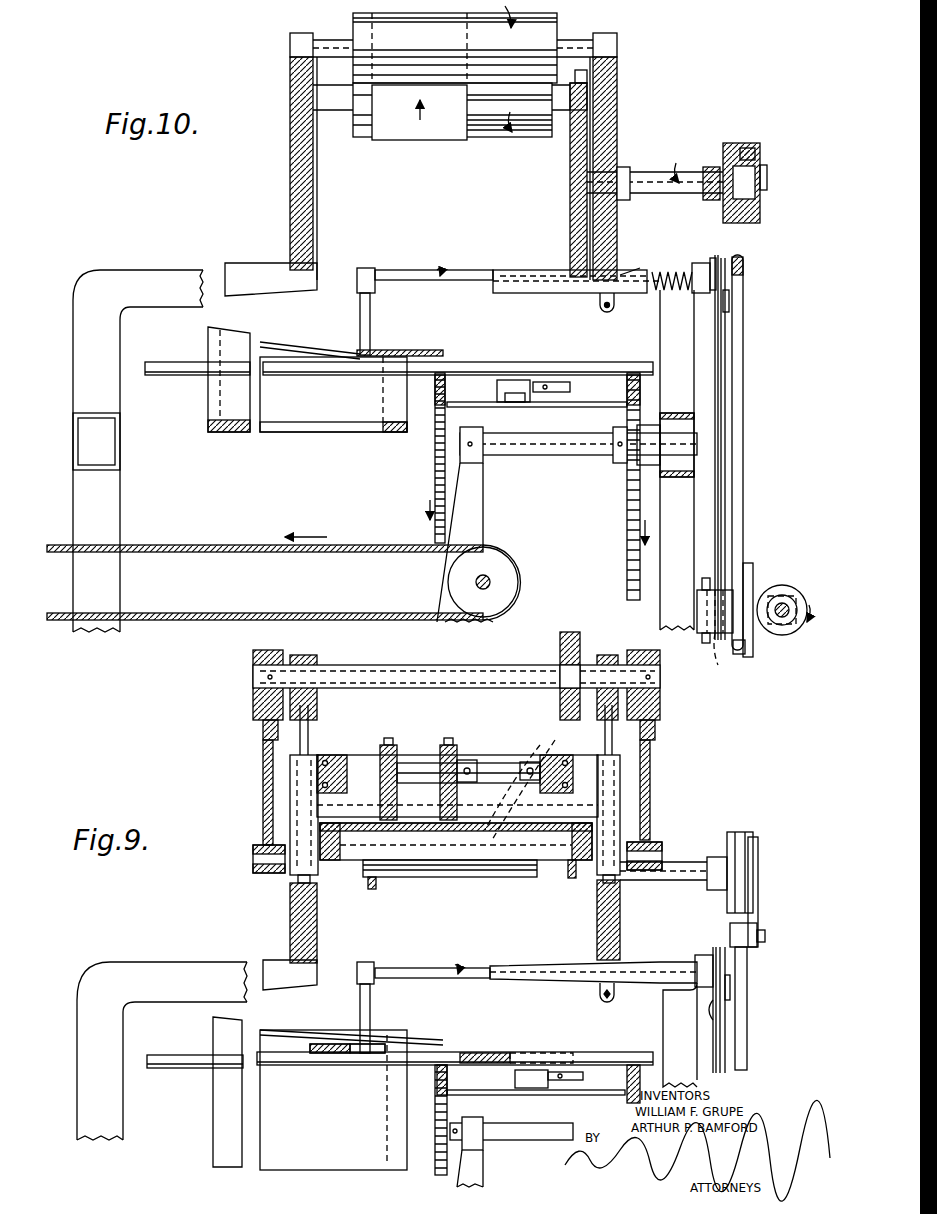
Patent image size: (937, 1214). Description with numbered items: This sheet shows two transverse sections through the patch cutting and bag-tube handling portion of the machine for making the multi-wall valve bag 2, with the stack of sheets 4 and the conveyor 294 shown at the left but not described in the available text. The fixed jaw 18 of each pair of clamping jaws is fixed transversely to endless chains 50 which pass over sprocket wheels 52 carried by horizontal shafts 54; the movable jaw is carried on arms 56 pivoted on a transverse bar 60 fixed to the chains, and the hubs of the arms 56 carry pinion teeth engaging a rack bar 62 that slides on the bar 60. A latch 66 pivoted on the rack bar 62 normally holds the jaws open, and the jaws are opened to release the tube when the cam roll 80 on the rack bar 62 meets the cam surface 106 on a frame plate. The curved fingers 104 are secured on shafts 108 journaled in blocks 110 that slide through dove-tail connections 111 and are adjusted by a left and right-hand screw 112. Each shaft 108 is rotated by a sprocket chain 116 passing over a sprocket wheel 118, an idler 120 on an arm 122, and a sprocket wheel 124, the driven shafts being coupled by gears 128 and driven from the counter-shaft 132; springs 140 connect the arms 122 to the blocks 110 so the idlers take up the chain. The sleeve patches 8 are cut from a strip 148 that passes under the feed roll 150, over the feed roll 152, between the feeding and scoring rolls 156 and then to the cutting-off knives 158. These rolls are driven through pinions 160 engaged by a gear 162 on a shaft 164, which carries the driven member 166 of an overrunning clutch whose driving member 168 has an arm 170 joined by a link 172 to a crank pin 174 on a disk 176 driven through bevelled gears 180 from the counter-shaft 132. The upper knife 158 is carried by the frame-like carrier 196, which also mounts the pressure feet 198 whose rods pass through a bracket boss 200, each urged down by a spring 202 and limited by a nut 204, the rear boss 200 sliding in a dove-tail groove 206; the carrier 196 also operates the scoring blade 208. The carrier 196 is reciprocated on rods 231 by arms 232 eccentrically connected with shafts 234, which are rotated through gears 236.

In FIG. 9, the bag 2 is at (262, 1170).
In FIG. 10, the bag 2 is at (232, 437).
In FIG. 10, the stack of sheets 4 is at (208, 418).
In FIG. 9, the sleeve sheets or patches 8 is at (440, 1035).
In FIG. 10, the sleeve sheets or patches 8 is at (432, 348).
In FIG. 9, the jaw 18 is at (158, 1070).
In FIG. 10, the jaw 18 is at (150, 377).
In FIG. 9, the endless chains 50 is at (435, 1160).
In FIG. 10, the endless chains 50 is at (430, 535).
In FIG. 10, the sprocket wheels 52 is at (435, 470).
In FIG. 9, the horizontal shafts 54 is at (520, 1120).
In FIG. 10, the horizontal shafts 54 is at (545, 455).
In FIG. 9, the arms 56 is at (355, 1053).
In FIG. 9, the transverse bar 60 is at (345, 1055).
In FIG. 9, the rack bar 62 is at (318, 1052).
In FIG. 9, the latch 66 is at (578, 1072).
In FIG. 10, the latch 66 is at (555, 392).
In FIG. 9, the cam roll 80 is at (515, 1080).
In FIG. 10, the cam roll 80 is at (518, 402).
In FIG. 9, the curved fingers 104 is at (358, 1012).
In FIG. 10, the curved fingers 104 is at (358, 325).
In FIG. 10, the cam surface 106 is at (510, 380).
In FIG. 9, the shafts 108 is at (430, 968).
In FIG. 10, the shafts 108 is at (437, 274).
In FIG. 9, the blocks 110 is at (518, 966).
In FIG. 10, the blocks 110 is at (560, 293).
In FIG. 10, the dove-tail connections 111 is at (620, 275).
In FIG. 9, the left and right-hand screw 112 is at (600, 994).
In FIG. 10, the left and right-hand screw 112 is at (607, 313).
In FIG. 9, the sprocket chains 116 is at (718, 1050).
In FIG. 10, the sprocket chains 116 is at (720, 352).
In FIG. 9, the sprocket wheel 118 is at (713, 952).
In FIG. 10, the sprocket wheel 118 is at (737, 255).
In FIG. 9, the idler 120 is at (730, 990).
In FIG. 10, the idler 120 is at (728, 301).
In FIG. 9, the arm 122 is at (718, 1022).
In FIG. 10, the sprocket wheel 124 is at (718, 650).
In FIG. 10, the gears 128 is at (703, 645).
In FIG. 10, the counter-shaft 132 is at (795, 587).
In FIG. 10, the springs 140 is at (682, 272).
In FIG. 10, the strip 148 is at (393, 107).
In FIG. 10, the feed roll 150 is at (490, 132).
In FIG. 10, the feed roll 152 is at (548, 31).
In FIG. 9, the feeding and scoring rolls 156 is at (470, 877).
In FIG. 9, the cutting-off knives 158 is at (512, 770).
In FIG. 10, the pinions 160 is at (598, 80).
In FIG. 10, the gear 162 is at (570, 240).
In FIG. 9, the shaft 164 is at (720, 862).
In FIG. 10, the shaft 164 is at (657, 173).
In FIG. 9, the driven member 166 is at (727, 847).
In FIG. 10, the driven member 166 is at (733, 143).
In FIG. 9, the driving member 168 is at (753, 846).
In FIG. 10, the driving member 168 is at (757, 148).
In FIG. 9, the arm 170 is at (758, 926).
In FIG. 9, the link 172 is at (747, 1066).
In FIG. 10, the link 172 is at (745, 421).
In FIG. 10, the crank pin 174 is at (742, 656).
In FIG. 10, the disk 176 is at (751, 656).
In FIG. 10, the bevelled gears 180 is at (772, 597).
In FIG. 9, the carrier 196 is at (288, 820).
In FIG. 9, the pressure feet 198 is at (382, 780).
In FIG. 9, the bracket boss 200 is at (420, 772).
In FIG. 9, the spring 202 is at (378, 762).
In FIG. 9, the nut 204 is at (455, 745).
In FIG. 9, the dove-tail groove 206 is at (532, 775).
In FIG. 9, the scoring blade 208 is at (482, 790).
In FIG. 9, the rods 231 is at (298, 738).
In FIG. 9, the arms 232 is at (263, 790).
In FIG. 9, the shafts 234 is at (375, 665).
In FIG. 9, the gears 236 is at (595, 617).
In FIG. 10, the conveyor 294 is at (56, 615).